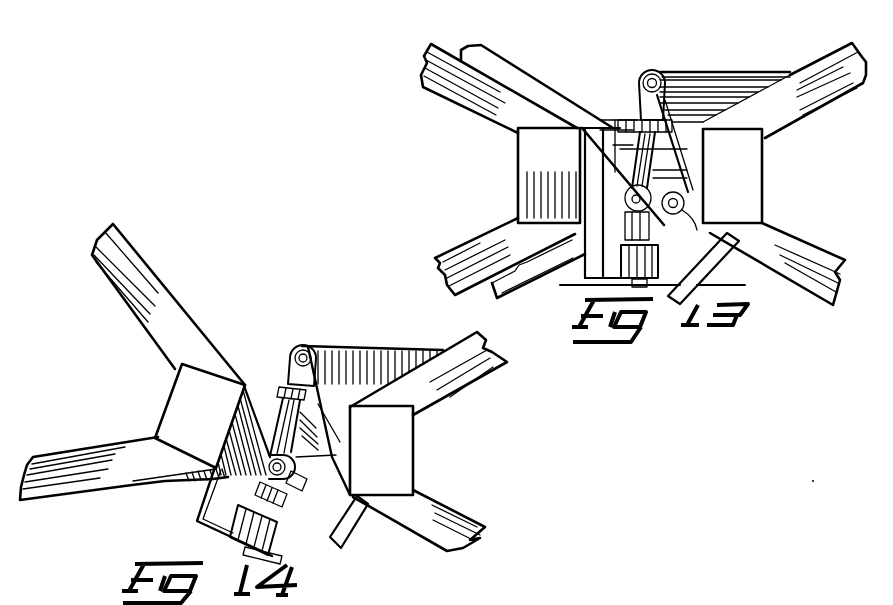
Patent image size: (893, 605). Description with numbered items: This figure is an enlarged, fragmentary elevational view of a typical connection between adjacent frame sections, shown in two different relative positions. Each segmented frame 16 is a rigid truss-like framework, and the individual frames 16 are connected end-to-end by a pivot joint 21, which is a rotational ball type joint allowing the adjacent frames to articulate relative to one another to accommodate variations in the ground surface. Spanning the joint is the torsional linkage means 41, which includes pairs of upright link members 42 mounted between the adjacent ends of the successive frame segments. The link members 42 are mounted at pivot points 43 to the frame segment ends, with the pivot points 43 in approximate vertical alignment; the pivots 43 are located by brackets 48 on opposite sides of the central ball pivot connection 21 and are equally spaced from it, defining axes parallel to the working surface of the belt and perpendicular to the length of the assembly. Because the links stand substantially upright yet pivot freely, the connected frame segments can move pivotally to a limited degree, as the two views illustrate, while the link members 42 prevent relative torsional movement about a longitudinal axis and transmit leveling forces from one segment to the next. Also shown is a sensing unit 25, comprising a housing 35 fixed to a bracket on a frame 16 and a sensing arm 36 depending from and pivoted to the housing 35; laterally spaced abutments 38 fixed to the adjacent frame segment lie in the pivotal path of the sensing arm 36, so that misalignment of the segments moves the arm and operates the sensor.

In FIG. 13, the segmented frame 16 is at (512, 143).
In FIG. 14, the segmented frame 16 is at (176, 366).
In FIG. 13, the pivot joint 21 is at (593, 163).
In FIG. 14, the pivot joint 21 is at (338, 442).
In FIG. 13, the sensing unit 25 is at (590, 278).
In FIG. 14, the sensing unit 25 is at (232, 533).
In FIG. 13, the housing 35 is at (658, 262).
In FIG. 14, the housing 35 is at (225, 502).
In FIG. 13, the sensing arm 36 is at (743, 285).
In FIG. 14, the sensing arm 36 is at (285, 549).
In FIG. 13, the abutment 38 is at (715, 260).
In FIG. 14, the abutment 38 is at (355, 533).
In FIG. 13, the torsional linkage means 41 is at (650, 64).
In FIG. 14, the torsional linkage means 41 is at (321, 339).
In FIG. 13, the link member 42 is at (678, 156).
In FIG. 14, the link member 42 is at (316, 402).
In FIG. 13, the pivot point 43 is at (640, 82).
In FIG. 14, the pivot point 43 is at (302, 352).
In FIG. 13, the bracket 48 is at (715, 85).
In FIG. 14, the bracket 48 is at (372, 358).